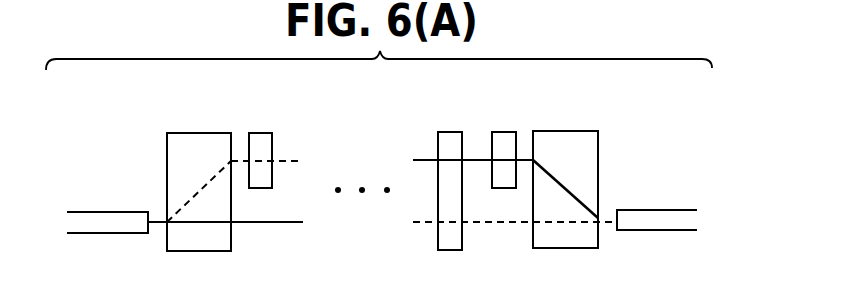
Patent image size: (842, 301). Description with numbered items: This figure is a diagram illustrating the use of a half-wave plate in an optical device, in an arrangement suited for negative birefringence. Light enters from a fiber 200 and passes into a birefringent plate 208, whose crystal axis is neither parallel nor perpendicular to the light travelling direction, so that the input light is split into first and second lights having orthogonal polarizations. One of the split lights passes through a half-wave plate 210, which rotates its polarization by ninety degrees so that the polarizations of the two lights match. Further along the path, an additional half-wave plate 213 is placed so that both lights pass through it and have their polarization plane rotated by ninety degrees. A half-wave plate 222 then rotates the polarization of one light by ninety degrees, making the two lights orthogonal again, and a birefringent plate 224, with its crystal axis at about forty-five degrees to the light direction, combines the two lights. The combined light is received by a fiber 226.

The fiber 200 is at (108, 212).
The birefringent plate 208 is at (202, 133).
The half-wave plate 210 is at (258, 133).
The additional half-wave plate 213 is at (448, 132).
The half-wave plate 222 is at (510, 132).
The birefringent plate 224 is at (572, 131).
The fiber 226 is at (652, 210).